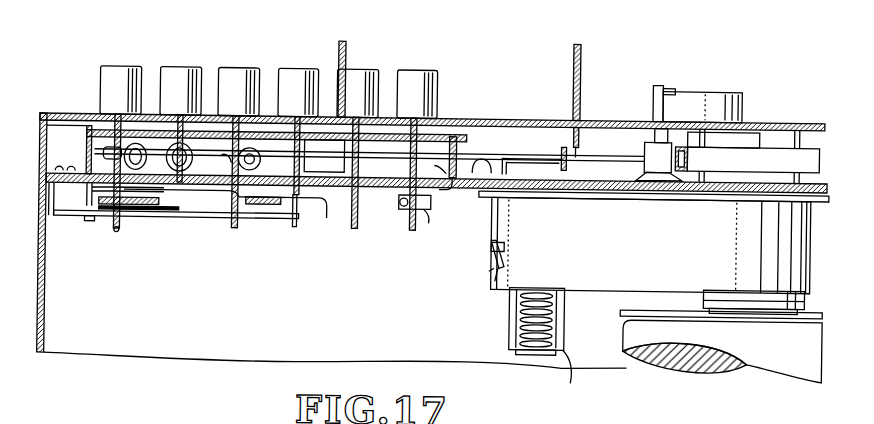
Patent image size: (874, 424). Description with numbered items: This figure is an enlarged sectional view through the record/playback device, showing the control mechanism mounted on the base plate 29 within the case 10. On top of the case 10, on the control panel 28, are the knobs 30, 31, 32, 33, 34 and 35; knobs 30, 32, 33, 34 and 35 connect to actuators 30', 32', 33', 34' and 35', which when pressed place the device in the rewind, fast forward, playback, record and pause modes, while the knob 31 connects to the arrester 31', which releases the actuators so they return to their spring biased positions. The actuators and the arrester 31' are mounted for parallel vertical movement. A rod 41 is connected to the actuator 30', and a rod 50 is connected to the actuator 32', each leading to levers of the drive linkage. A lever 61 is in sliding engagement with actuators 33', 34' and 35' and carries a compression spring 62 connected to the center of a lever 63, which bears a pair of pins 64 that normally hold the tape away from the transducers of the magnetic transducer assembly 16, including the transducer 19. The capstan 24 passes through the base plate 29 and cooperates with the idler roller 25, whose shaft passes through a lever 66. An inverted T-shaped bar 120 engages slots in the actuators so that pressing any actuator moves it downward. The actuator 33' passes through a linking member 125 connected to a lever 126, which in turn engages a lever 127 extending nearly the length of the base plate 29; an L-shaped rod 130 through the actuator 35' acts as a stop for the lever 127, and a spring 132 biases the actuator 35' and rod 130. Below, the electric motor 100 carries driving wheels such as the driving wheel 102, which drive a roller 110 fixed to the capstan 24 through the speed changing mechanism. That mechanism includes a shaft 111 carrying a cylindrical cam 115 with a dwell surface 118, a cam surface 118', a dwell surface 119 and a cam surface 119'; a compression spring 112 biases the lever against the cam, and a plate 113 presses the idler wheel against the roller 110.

The case 10 is at (40, 347).
The magnetic transducer assembly 16 is at (545, 106).
The transducer 19 is at (80, 131).
The capstan 24 is at (661, 76).
The idler roller 25 is at (713, 84).
The control panel 28 is at (90, 131).
The base plate 29 is at (42, 178).
The knob 30 is at (121, 66).
The knob 31 is at (181, 73).
The arrester 31' is at (164, 131).
The knob 32 is at (239, 71).
The knob 33 is at (298, 71).
The knob 34 is at (362, 71).
The knob 35 is at (419, 73).
The actuator 30' is at (123, 193).
The actuator 32' is at (243, 194).
The actuator 33' is at (303, 194).
The actuator 34' is at (363, 196).
The actuator 35' is at (423, 196).
The rod 41 is at (111, 158).
The rod 50 is at (233, 158).
The lever 61 is at (439, 165).
The compression spring 62 is at (568, 154).
The lever 63 is at (601, 147).
The pins 64 is at (342, 36).
The lever 66 is at (782, 148).
The electric motor 100 is at (634, 358).
The driving wheel 102 is at (731, 290).
The roller 110 is at (667, 263).
The shaft 111 is at (527, 327).
The compression spring 112 is at (524, 311).
The plate 113 is at (571, 378).
The cylindrical cam 115 is at (512, 209).
The third dwell surface 118 is at (531, 262).
The cam surface 118' is at (534, 250).
The fourth dwell surface 119 is at (474, 287).
The cam surface 119' is at (470, 276).
The inverted T-shaped bar 120 is at (267, 203).
The linking member 125 is at (314, 214).
The lever 126 is at (91, 220).
The lever 127 is at (201, 215).
The L-shaped rod 130 is at (411, 201).
The spring 132 is at (428, 210).